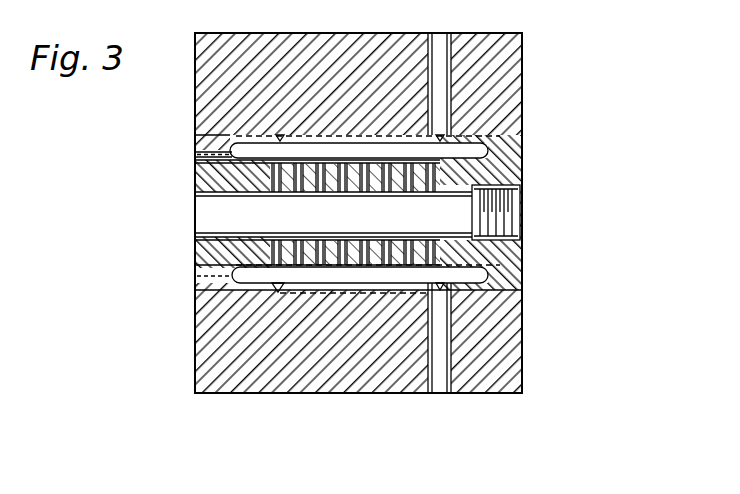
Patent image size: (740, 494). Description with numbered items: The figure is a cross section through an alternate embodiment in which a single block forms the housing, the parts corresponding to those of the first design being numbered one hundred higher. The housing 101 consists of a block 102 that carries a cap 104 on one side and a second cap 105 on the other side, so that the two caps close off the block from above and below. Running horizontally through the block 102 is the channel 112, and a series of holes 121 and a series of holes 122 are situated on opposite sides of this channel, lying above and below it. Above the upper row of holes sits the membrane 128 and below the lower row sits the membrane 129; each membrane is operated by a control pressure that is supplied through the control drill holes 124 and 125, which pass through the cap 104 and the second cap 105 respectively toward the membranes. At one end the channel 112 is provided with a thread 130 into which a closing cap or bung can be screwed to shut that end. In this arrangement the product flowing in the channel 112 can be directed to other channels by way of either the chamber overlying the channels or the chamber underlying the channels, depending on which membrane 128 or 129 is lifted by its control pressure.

The housing 101 is at (530, 110).
The block 102 is at (223, 176).
The cap 104 is at (213, 80).
The second cap 105 is at (520, 338).
The channel 112 is at (320, 238).
The holes 121 is at (317, 196).
The holes 122 is at (250, 242).
The control drill hole 124 is at (443, 50).
The control drill hole 125 is at (440, 377).
The membrane 128 is at (303, 146).
The membrane 129 is at (388, 262).
The thread 130 is at (520, 232).